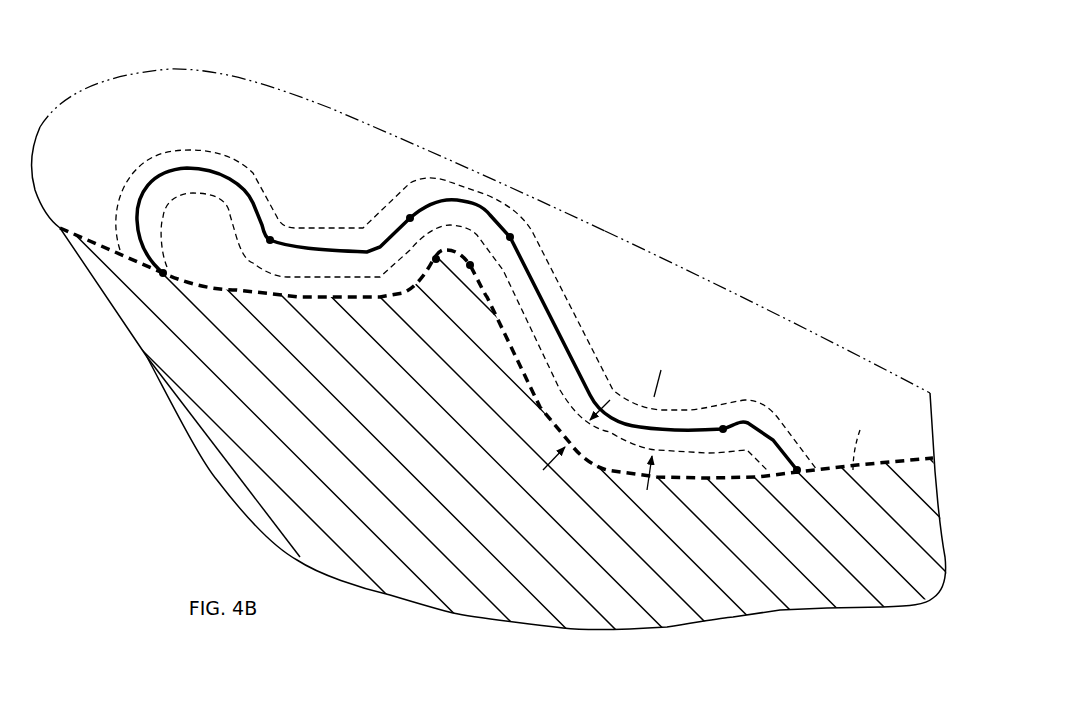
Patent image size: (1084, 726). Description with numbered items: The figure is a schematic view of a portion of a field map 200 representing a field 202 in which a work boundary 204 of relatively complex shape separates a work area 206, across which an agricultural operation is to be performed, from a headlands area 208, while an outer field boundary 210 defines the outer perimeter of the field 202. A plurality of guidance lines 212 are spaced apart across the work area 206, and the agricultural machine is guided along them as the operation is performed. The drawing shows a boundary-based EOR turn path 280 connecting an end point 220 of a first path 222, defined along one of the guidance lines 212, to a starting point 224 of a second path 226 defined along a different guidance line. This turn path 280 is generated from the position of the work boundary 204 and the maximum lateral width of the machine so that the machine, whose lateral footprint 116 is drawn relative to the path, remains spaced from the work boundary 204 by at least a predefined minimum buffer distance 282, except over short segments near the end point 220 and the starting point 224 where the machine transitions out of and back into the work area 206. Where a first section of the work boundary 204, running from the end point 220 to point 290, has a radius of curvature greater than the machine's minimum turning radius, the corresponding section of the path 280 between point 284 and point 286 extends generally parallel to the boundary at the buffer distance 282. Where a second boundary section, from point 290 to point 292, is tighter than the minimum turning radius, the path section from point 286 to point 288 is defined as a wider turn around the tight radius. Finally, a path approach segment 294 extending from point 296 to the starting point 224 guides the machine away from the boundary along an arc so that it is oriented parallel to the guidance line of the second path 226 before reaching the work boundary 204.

The field map 200 is at (749, 146).
The field 202 is at (441, 150).
The work boundary 204 is at (860, 432).
The work area 206 is at (496, 515).
The headlands area 208 is at (716, 335).
The outer field boundary 210 is at (722, 284).
The guidance lines 212 is at (385, 592).
The end point 220 is at (798, 474).
The first path 222 is at (913, 590).
The starting point 224 is at (163, 276).
The second path 226 is at (540, 607).
The lateral footprint 116 is at (658, 405).
The boundary-based EOR turn path 280 is at (568, 342).
The minimum buffer distance 282 is at (566, 448).
The point 284 is at (725, 428).
The point 286 is at (512, 237).
The point 288 is at (410, 217).
The point 290 is at (464, 265).
The point 292 is at (436, 268).
The path approach segment 294 is at (159, 181).
The point 296 is at (272, 238).